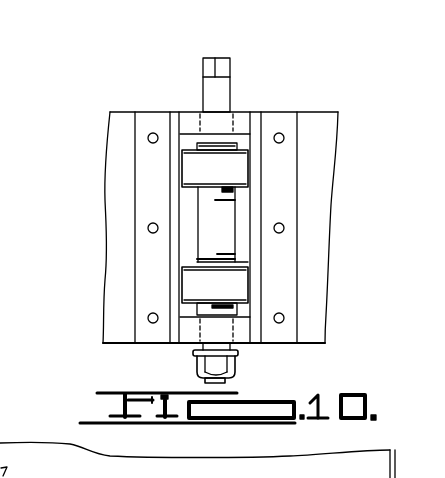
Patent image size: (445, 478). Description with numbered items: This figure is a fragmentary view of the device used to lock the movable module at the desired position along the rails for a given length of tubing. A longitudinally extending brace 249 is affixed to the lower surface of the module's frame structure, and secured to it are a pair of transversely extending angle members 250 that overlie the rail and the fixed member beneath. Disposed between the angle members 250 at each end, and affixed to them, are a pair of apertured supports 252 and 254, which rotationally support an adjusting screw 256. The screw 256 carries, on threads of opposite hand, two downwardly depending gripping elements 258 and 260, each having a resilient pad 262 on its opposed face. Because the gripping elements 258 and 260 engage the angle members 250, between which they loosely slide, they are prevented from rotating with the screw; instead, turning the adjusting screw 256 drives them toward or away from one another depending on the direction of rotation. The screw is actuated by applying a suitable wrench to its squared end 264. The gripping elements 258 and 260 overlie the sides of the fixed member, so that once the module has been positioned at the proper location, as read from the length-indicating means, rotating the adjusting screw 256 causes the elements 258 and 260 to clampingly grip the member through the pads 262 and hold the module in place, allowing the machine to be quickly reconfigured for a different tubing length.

The brace 249 is at (117, 182).
The angle members 250 is at (143, 288).
The apertured support 252 is at (244, 112).
The apertured support 254 is at (190, 345).
The adjusting screw 256 is at (232, 90).
The gripping element 258 is at (248, 168).
The gripping element 260 is at (248, 288).
The resilient pad 262 is at (248, 190).
The squared end 264 is at (210, 62).